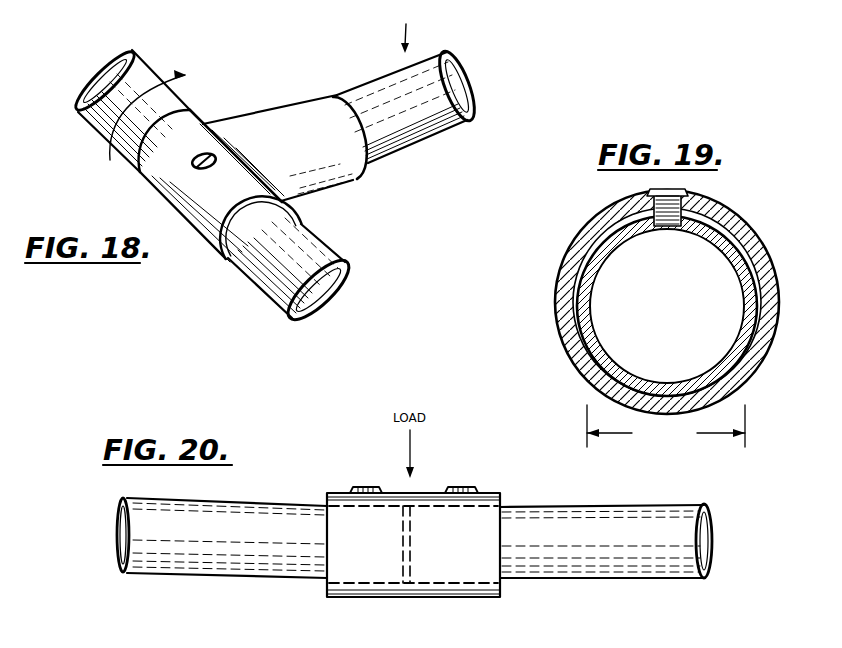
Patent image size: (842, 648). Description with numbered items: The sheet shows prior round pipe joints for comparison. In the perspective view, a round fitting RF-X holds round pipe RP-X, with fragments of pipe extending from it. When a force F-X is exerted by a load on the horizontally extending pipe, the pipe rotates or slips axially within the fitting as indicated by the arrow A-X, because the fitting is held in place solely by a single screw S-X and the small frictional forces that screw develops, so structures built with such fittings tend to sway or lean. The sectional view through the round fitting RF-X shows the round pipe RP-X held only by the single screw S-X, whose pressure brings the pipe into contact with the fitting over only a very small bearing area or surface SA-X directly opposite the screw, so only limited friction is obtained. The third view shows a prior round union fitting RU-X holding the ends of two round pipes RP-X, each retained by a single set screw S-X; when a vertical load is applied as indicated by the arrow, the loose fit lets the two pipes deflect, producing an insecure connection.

In FIG. 18, the round pipe RP-X is at (153, 76).
In FIG. 19, the round pipe RP-X is at (744, 273).
In FIG. 20, the round pipe RP-X is at (132, 529).
In FIG. 18, the round fitting RF-X is at (224, 133).
In FIG. 19, the round fitting RF-X is at (558, 333).
In FIG. 18, the screw S-X is at (207, 169).
In FIG. 19, the screw S-X is at (677, 183).
In FIG. 20, the screw S-X is at (378, 487).
In FIG. 18, the arrow A-X is at (111, 152).
In FIG. 18, the force F-X is at (404, 29).
In FIG. 19, the bearing area or surface SA-X is at (666, 426).
In FIG. 20, the round union fitting RU-X is at (327, 590).